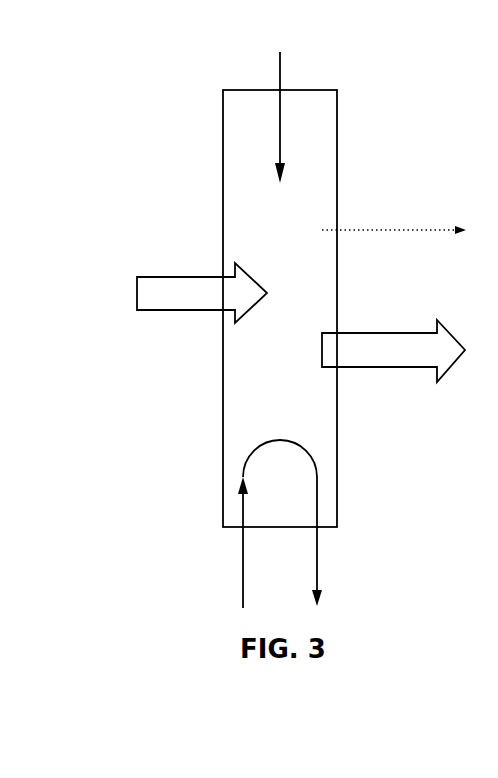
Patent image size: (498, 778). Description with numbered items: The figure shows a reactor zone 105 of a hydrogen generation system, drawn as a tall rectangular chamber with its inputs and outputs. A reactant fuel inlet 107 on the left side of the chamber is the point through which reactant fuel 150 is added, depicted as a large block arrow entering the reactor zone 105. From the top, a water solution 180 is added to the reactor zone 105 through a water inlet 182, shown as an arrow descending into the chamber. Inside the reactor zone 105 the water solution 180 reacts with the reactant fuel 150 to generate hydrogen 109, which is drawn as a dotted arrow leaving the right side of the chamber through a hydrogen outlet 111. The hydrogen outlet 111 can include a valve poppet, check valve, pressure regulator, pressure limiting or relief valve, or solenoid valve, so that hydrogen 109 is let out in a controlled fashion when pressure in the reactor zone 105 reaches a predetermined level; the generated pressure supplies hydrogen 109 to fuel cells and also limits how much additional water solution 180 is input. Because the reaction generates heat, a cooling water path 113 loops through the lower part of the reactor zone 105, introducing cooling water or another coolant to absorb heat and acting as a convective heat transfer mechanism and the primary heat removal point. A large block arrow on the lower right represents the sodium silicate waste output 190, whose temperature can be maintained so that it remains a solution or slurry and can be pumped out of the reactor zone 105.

The reactor zone 105 is at (241, 200).
The water solution 180 is at (283, 66).
The water inlet 182 is at (260, 76).
The hydrogen 109 is at (391, 232).
The hydrogen outlet 111 is at (345, 218).
The reactant fuel 150 is at (137, 292).
The reactant fuel inlet 107 is at (201, 328).
The sodium silicate waste output 190 is at (421, 368).
The cooling water path 113 is at (242, 566).